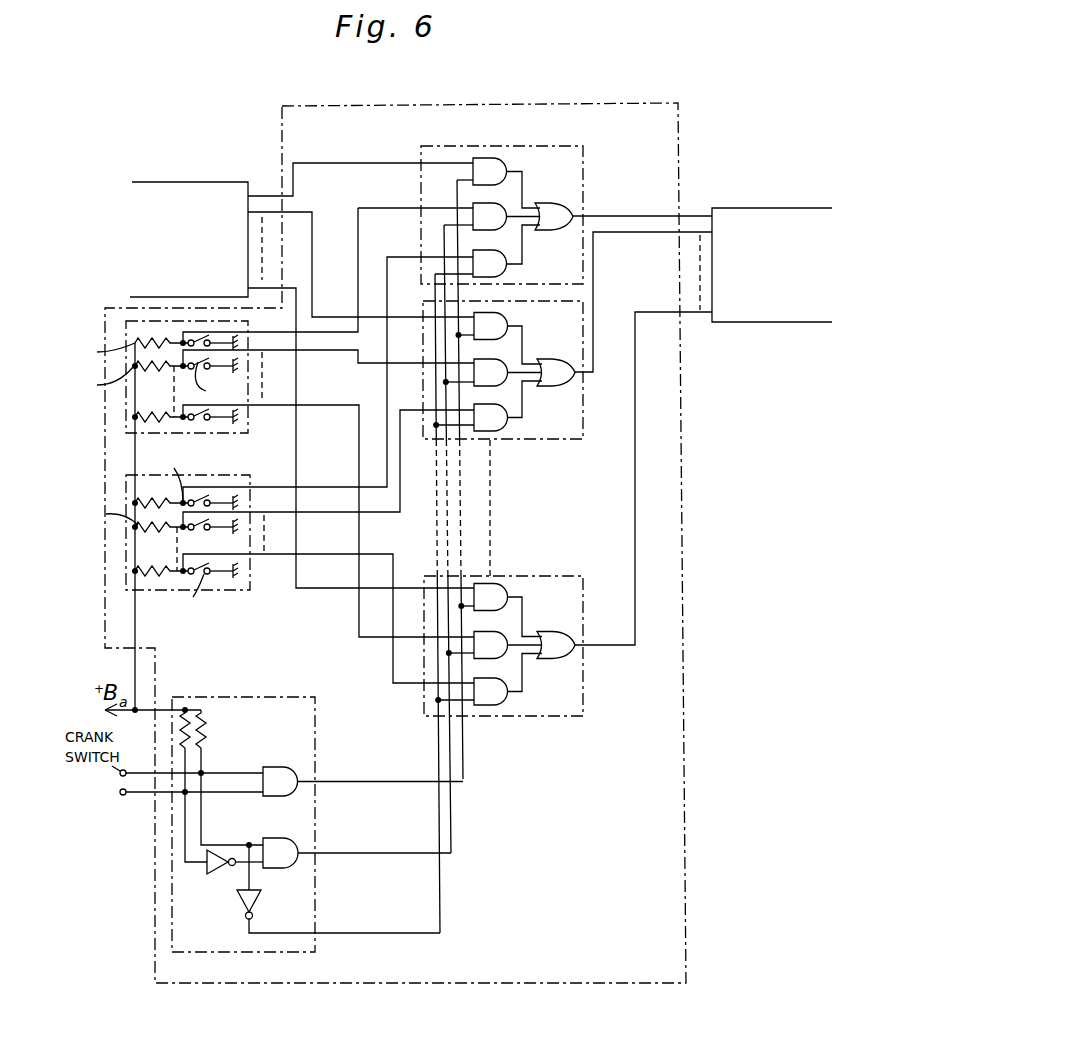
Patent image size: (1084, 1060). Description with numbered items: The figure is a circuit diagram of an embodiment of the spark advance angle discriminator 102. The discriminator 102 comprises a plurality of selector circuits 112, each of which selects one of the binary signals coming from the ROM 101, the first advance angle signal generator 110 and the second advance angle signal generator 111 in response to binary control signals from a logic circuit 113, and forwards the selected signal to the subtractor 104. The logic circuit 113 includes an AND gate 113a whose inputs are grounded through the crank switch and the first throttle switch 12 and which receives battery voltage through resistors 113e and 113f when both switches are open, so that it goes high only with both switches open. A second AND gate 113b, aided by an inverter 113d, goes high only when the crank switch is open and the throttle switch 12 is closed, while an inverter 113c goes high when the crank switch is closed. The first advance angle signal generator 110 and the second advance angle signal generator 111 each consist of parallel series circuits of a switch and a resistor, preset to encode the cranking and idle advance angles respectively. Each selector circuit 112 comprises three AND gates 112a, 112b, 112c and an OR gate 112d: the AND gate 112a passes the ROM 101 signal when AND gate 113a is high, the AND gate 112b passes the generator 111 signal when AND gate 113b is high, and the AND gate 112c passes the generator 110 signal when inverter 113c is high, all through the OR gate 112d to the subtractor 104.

The ROM 101 is at (172, 182).
The discriminator 102 is at (503, 103).
The subtractor 104 is at (740, 208).
The first advance angle signal generator 110 is at (206, 590).
The second advance angle signal generator 111 is at (190, 433).
The selector circuit 112 is at (586, 194).
The AND gate 112a is at (507, 166).
The AND gate 112b is at (509, 205).
The AND gate 112c is at (507, 270).
The OR gate 112d is at (563, 231).
The logic circuit 113 is at (315, 708).
The AND gate 113a is at (298, 751).
The AND gate 113b is at (285, 838).
The inverter 113c is at (255, 904).
The inverter 113d is at (222, 871).
The resistor 113e is at (204, 728).
The resistor 113f is at (187, 712).
The first throttle switch 12 is at (120, 797).